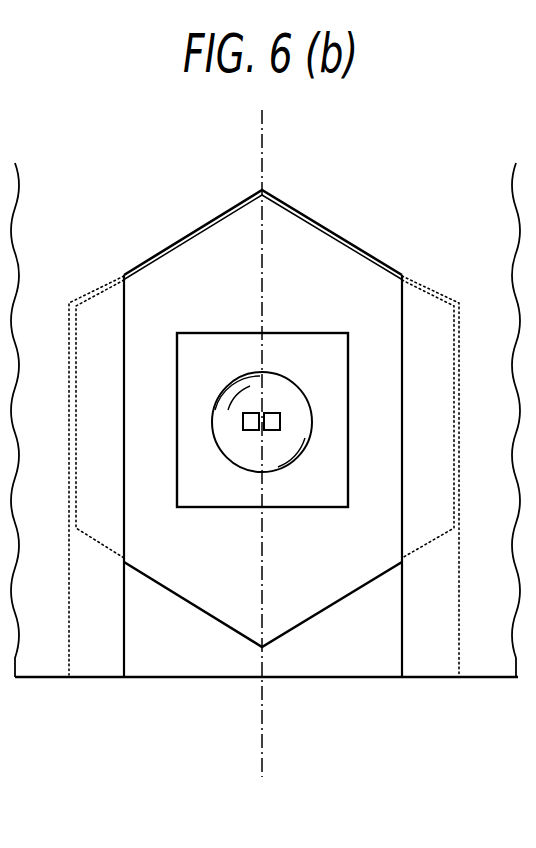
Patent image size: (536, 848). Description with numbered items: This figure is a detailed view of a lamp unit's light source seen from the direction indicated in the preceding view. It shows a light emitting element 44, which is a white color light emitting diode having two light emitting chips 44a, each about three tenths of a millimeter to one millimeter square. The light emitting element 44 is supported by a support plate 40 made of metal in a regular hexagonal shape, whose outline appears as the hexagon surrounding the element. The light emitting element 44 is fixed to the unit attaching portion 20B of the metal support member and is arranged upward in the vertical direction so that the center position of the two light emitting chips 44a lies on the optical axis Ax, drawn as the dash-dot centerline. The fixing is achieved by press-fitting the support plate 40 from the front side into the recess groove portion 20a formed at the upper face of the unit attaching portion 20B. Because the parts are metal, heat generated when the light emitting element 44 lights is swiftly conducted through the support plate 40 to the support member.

The support plate 40 is at (213, 267).
The light emitting element 44 is at (315, 320).
The light emitting chips 44a is at (249, 423).
The recess groove portion 20a is at (344, 660).
The unit attaching portion 20B is at (482, 680).
The optical axis Ax is at (262, 718).